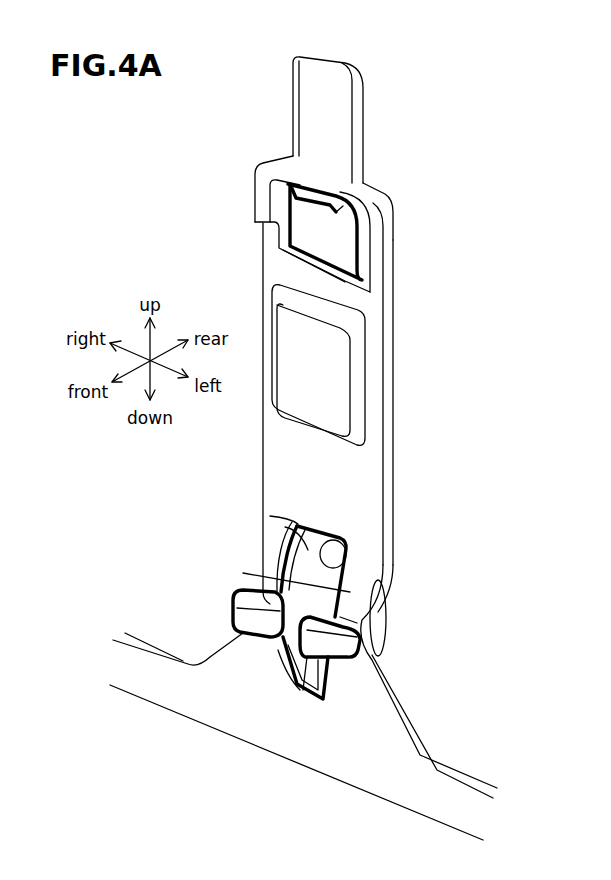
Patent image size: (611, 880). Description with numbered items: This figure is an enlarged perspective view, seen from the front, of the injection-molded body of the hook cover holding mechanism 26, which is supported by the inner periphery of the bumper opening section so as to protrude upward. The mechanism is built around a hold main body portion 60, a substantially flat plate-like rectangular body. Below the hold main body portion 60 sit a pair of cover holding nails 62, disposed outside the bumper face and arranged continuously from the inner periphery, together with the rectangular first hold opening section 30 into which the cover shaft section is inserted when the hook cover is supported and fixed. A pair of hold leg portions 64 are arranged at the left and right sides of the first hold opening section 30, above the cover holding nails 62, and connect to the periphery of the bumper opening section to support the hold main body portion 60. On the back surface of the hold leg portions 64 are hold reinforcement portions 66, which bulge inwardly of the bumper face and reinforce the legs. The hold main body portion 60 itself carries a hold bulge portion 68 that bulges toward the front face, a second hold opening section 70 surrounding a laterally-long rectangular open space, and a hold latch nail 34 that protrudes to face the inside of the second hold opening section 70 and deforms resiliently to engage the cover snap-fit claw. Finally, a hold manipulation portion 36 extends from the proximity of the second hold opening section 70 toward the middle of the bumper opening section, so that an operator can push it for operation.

The hook cover holding mechanism 26 is at (418, 198).
The first hold opening section 30 is at (342, 572).
The hold latch nail 34 is at (313, 206).
The hold manipulation portion 36 is at (329, 108).
The hold main body portion 60 is at (410, 483).
The cover holding nails 62 is at (315, 643).
The hold leg portions 64 is at (263, 560).
The hold reinforcement portions 66 is at (270, 516).
The hold bulge portion 68 is at (316, 371).
The second hold opening section 70 is at (338, 237).